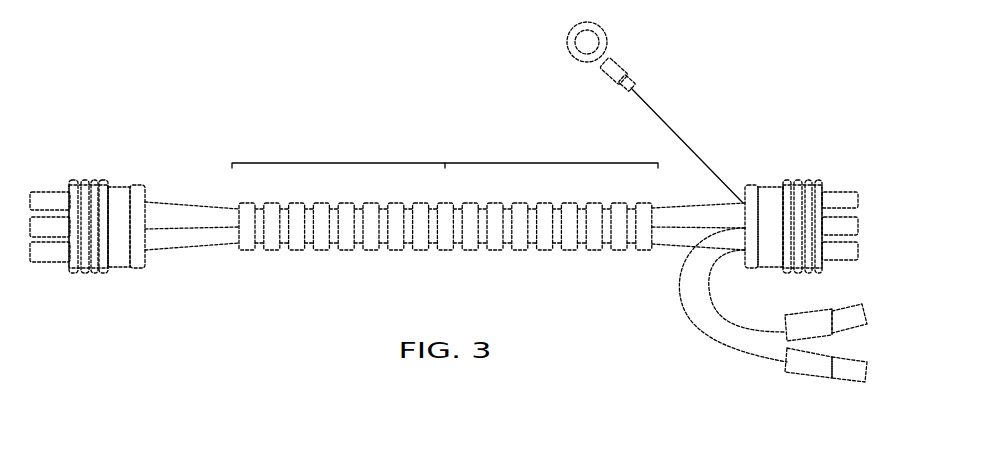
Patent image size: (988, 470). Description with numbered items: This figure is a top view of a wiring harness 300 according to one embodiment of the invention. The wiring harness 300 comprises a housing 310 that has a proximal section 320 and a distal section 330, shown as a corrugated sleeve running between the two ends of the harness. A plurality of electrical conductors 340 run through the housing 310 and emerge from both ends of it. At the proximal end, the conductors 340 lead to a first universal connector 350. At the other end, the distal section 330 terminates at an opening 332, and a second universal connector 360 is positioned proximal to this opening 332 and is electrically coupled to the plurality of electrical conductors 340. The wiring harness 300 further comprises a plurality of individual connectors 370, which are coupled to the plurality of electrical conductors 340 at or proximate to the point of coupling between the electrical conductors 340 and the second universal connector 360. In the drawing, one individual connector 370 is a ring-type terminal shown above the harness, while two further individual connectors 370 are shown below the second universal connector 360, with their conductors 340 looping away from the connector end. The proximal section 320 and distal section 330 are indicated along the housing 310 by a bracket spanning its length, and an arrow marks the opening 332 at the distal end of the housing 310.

The wiring harness 300 is at (750, 108).
The housing 310 is at (343, 205).
The proximal section 320 is at (337, 163).
The distal section 330 is at (550, 163).
The opening 332 is at (664, 233).
The plurality of electrical conductors 340 is at (180, 204).
The first universal connector 350 is at (103, 247).
The second universal connector 360 is at (815, 232).
The plurality of individual connectors 370 is at (600, 48).